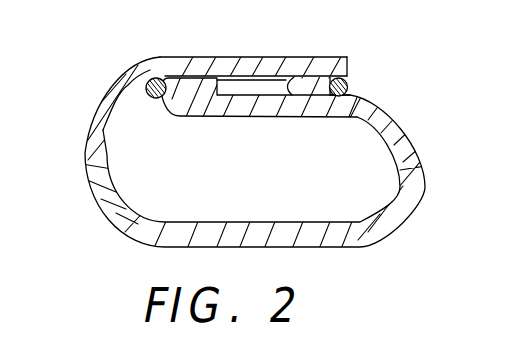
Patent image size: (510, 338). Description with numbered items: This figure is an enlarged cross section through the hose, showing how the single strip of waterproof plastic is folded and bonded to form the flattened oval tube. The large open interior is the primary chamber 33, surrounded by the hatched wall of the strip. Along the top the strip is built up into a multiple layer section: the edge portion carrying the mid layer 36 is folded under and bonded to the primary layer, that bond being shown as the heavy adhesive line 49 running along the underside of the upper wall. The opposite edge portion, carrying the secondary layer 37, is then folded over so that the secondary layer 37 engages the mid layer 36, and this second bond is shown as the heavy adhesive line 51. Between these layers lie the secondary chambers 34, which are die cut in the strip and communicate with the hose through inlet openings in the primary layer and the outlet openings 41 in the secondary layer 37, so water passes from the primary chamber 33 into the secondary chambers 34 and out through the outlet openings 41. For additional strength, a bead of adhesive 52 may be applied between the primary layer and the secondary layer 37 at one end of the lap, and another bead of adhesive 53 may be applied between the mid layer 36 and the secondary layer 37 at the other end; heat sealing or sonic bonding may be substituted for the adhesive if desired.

The primary chamber 33 is at (254, 152).
The secondary chambers 34 is at (284, 77).
The mid layer 36 is at (291, 118).
The secondary layer 37 is at (184, 126).
The outlet openings 41 is at (233, 73).
The adhesive layer 49 is at (184, 118).
The adhesive layer 51 is at (186, 56).
The bead of adhesive 52 is at (348, 88).
The bead of adhesive 53 is at (104, 104).